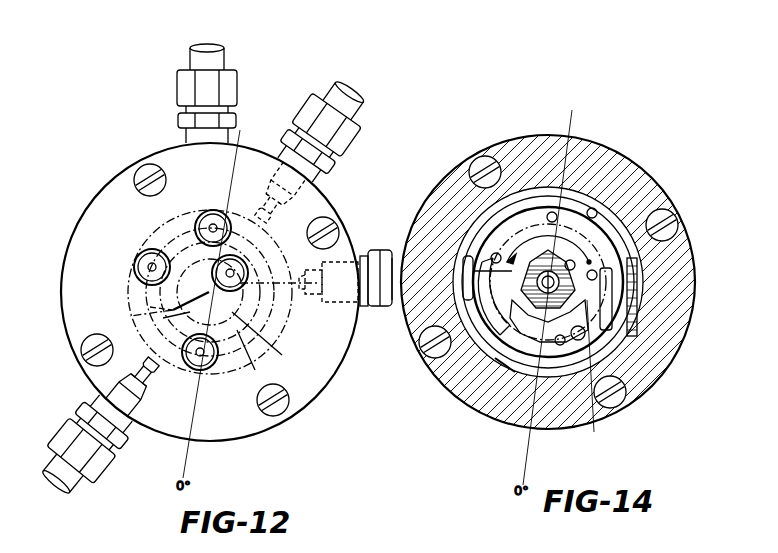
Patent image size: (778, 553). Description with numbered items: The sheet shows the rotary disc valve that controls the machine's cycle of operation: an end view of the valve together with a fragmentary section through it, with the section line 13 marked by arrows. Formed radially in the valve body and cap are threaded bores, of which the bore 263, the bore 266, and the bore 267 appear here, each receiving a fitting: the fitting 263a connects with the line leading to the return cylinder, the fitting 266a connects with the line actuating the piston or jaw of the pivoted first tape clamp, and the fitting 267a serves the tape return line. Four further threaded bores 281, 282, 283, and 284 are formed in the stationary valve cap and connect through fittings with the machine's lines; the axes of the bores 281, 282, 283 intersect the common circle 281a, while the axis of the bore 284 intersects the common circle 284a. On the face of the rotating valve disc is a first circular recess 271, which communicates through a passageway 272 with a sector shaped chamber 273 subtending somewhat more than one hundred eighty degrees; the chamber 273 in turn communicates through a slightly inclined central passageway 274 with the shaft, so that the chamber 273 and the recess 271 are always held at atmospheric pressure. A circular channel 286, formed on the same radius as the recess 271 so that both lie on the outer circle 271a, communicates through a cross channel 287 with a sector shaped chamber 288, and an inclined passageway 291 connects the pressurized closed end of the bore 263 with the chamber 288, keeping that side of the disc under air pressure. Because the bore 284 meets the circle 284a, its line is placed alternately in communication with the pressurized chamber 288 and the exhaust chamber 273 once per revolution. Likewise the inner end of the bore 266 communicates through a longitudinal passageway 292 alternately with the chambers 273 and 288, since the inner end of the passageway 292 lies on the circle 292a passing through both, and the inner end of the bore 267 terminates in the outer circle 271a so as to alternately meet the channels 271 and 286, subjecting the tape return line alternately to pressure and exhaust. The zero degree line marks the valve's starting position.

In FIG. 12, the section line 13- 13 is at (232, 18).
In FIG. 12, the threaded bore 263 is at (252, 162).
In FIG. 14, the threaded bore 263 is at (596, 210).
In FIG. 12, the fitting 263a is at (298, 103).
In FIG. 12, the threaded bore 266 is at (338, 300).
In FIG. 12, the fitting 266a is at (381, 308).
In FIG. 12, the threaded bore 267 is at (150, 408).
In FIG. 14, the threaded bore 267 is at (492, 366).
In FIG. 12, the fitting 267a is at (96, 460).
In FIG. 14, the circular recess 271 is at (548, 372).
In FIG. 12, the outer circle 271a is at (150, 307).
In FIG. 14, the passageway 272 is at (480, 312).
In FIG. 14, the sector shaped chamber 273 is at (549, 250).
In FIG. 14, the central passageway 274 is at (470, 271).
In FIG. 12, the threaded bore 281 is at (203, 364).
In FIG. 14, the threaded bore 281 is at (562, 345).
In FIG. 12, the common circle 281a is at (163, 318).
In FIG. 12, the threaded bore 282 is at (137, 266).
In FIG. 14, the threaded bore 282 is at (492, 252).
In FIG. 12, the threaded bore 283 is at (213, 212).
In FIG. 14, the threaded bore 283 is at (553, 210).
In FIG. 12, the threaded bore 284 is at (232, 271).
In FIG. 14, the threaded bore 284 is at (575, 262).
In FIG. 12, the common circle 284a is at (276, 337).
In FIG. 14, the circular channel 286 is at (636, 272).
In FIG. 14, the cross channel 287 is at (600, 338).
In FIG. 14, the sector shaped chamber 288 is at (520, 345).
In FIG. 14, the inclined passageway 291 is at (590, 375).
In FIG. 12, the longitudinal passageway 292 is at (272, 283).
In FIG. 14, the longitudinal passageway 292 is at (600, 274).
In FIG. 12, the circle 292a is at (257, 358).